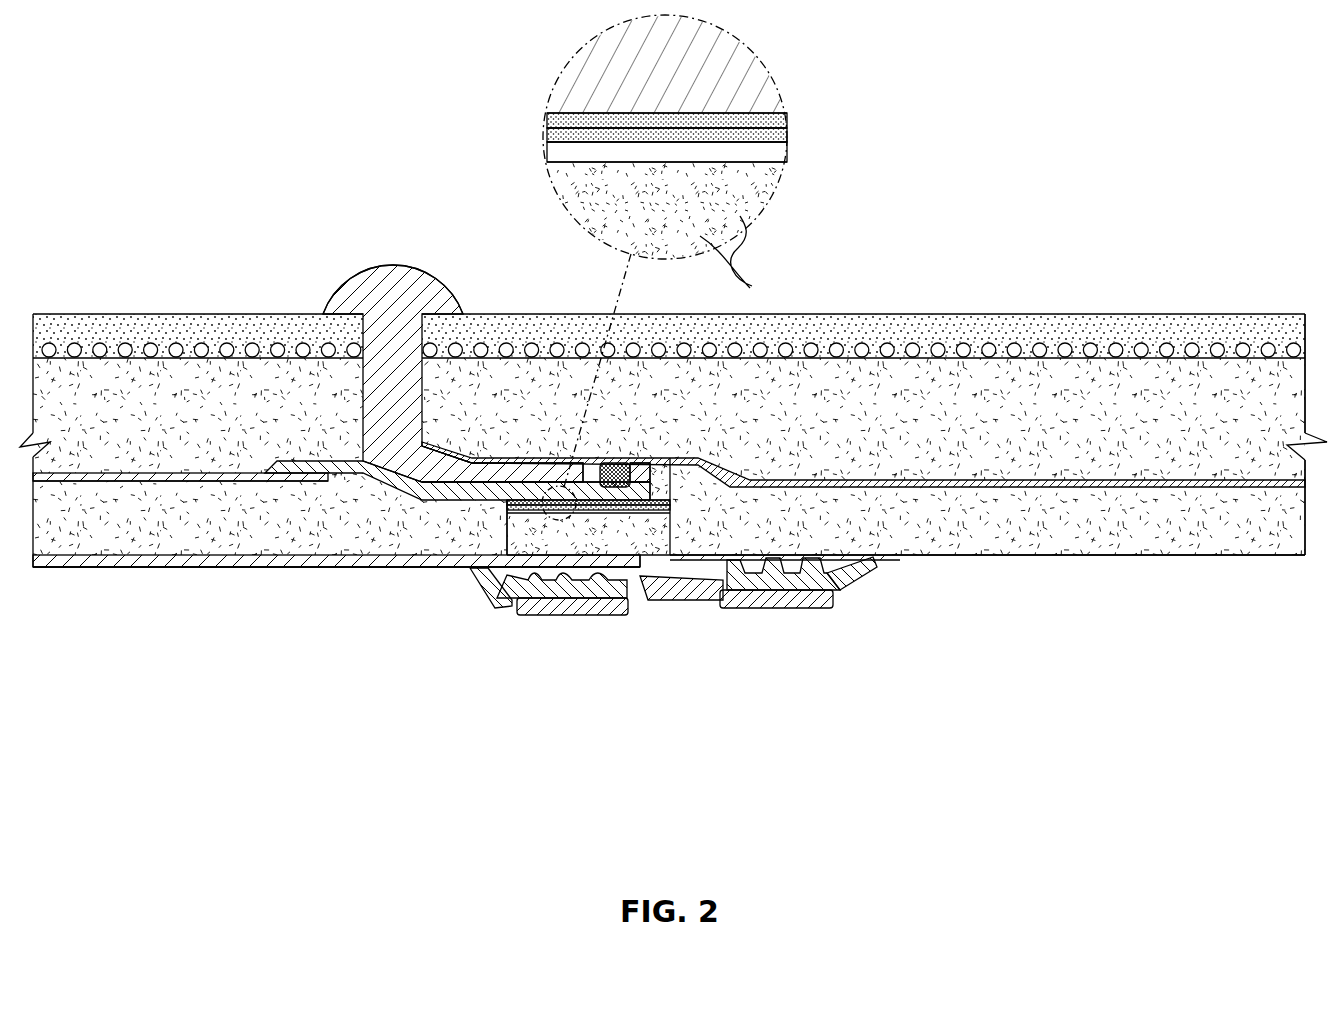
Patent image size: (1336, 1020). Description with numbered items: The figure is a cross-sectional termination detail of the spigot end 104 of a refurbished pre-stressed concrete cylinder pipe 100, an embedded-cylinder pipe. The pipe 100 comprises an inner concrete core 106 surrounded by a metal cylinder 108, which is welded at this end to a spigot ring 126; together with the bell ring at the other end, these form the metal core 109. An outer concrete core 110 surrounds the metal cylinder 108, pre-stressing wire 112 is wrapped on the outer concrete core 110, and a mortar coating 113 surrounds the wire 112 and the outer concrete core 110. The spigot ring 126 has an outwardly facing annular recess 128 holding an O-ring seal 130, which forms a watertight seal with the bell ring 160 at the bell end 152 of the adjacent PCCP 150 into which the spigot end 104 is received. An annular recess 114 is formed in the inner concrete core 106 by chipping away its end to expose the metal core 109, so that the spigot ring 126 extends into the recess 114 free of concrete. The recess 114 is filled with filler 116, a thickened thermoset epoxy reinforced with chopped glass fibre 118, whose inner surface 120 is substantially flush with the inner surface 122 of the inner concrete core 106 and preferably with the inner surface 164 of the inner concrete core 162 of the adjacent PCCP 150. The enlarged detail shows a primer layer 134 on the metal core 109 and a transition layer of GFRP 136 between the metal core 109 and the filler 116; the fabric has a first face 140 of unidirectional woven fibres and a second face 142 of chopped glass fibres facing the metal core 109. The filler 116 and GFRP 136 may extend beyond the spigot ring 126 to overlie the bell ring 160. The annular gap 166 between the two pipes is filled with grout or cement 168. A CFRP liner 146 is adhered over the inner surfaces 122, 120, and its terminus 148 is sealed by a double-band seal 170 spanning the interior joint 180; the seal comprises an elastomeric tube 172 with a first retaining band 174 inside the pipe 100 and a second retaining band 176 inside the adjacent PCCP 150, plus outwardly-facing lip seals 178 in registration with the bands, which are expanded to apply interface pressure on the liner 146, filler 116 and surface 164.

The pre-stressed concrete cylinder pipe 100 is at (198, 162).
The spigot end 104 is at (318, 306).
The inner concrete core 106 is at (218, 534).
The metal cylinder 108 is at (103, 483).
The metal core 109 is at (268, 448).
The outer concrete core 110 is at (183, 424).
The pre-stressing wire 112 is at (124, 342).
The mortar coating 113 is at (158, 312).
The annular recess 114 is at (496, 530).
The filler 116 is at (662, 532).
The chopped glass fibre 118 is at (753, 256).
The inner surface of the filler 120 is at (662, 572).
The inner surface of the inner concrete core 122 is at (297, 571).
The spigot ring 126 is at (382, 489).
The annular recess of the spigot ring 128 is at (648, 455).
The O-ring seal 130 is at (614, 457).
The primer layer 134 is at (790, 120).
The transition layer of glass fiber reinforced polymer 136 is at (802, 128).
The first face of the glass fibre fabric 140 is at (546, 153).
The second face of the glass fibre fabric 142 is at (546, 127).
The CFRP liner 146 is at (208, 569).
The terminus of the CFRP liner 148 is at (638, 582).
The adjacent PCCP 150 is at (1068, 262).
The bell end of the adjacent PCCP 152 is at (521, 292).
The bell ring of the adjacent PCCP 160 is at (544, 460).
The inner concrete core of the adjacent PCCP 162 is at (1047, 534).
The inner surface of the inner concrete core of the adjacent PCCP 164 is at (986, 561).
The annular gap 166 is at (438, 386).
The grout or cement 168 is at (377, 275).
The double-band seal 170 is at (851, 614).
The elastomeric tube 172 is at (700, 602).
The first retaining band 174 is at (551, 612).
The second retaining band 176 is at (790, 606).
The lip seal 178 is at (478, 590).
The interior joint 180 is at (680, 498).